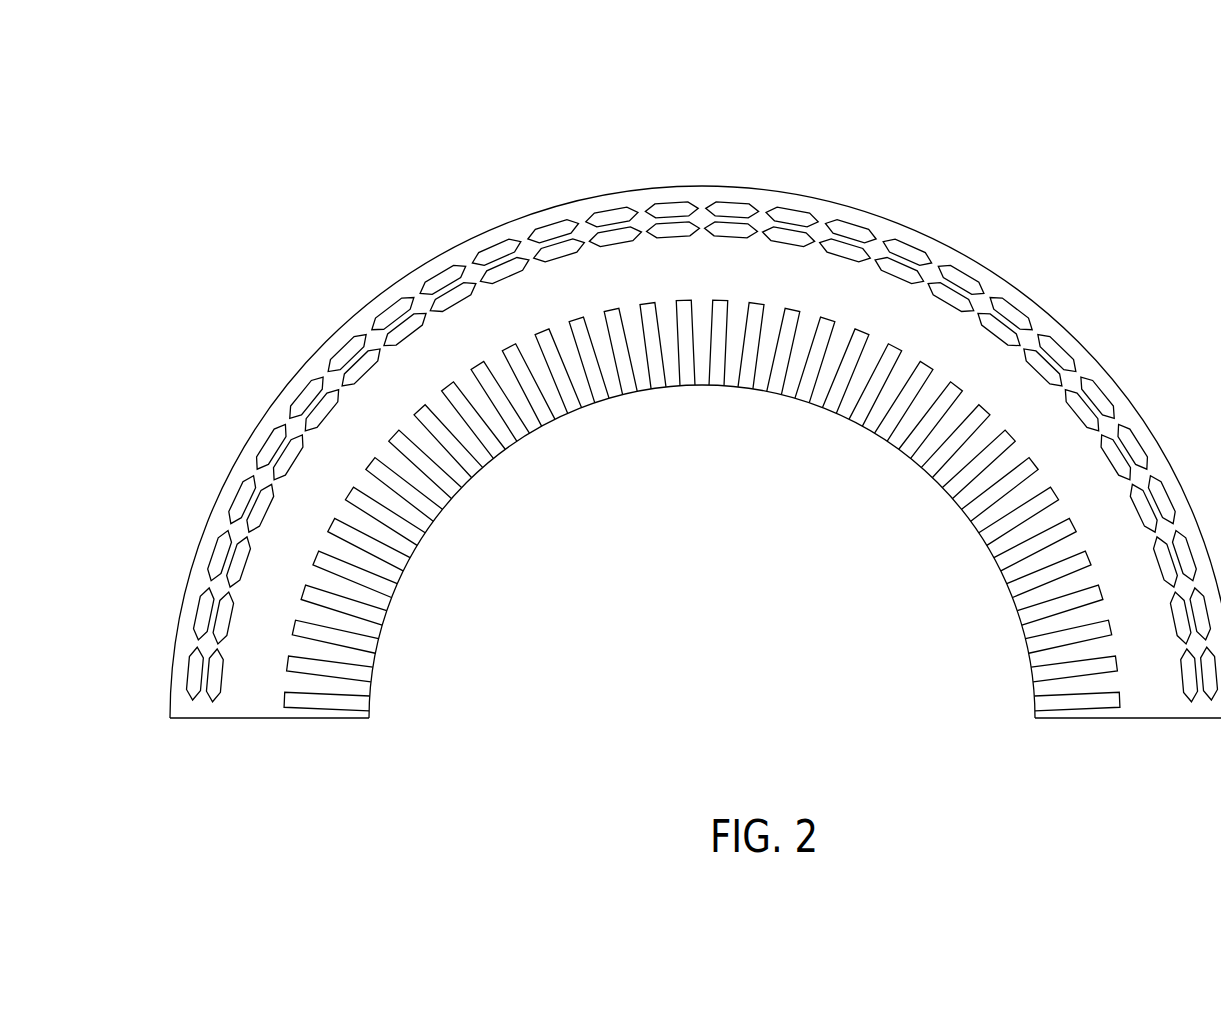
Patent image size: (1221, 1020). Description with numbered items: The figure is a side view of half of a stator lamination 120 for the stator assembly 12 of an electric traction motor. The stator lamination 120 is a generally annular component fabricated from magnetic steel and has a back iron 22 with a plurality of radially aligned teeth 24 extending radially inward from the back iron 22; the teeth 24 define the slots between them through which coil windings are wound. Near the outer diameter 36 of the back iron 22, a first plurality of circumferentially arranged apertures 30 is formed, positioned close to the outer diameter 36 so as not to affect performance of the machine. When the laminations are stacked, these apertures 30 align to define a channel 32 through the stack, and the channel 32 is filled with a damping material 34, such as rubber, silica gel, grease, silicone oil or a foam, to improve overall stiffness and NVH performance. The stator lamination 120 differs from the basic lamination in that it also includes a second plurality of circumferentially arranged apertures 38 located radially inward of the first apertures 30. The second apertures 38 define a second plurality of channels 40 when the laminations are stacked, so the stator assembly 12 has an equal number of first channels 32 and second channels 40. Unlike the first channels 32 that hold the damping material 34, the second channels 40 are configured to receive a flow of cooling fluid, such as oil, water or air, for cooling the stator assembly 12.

The stator assembly 12 is at (1128, 142).
The stator lamination 120 is at (410, 198).
The back iron 22 is at (994, 291).
The teeth 24 is at (500, 432).
The apertures 30 is at (608, 208).
The channel 32 is at (675, 207).
The damping material 34 is at (627, 208).
The outer diameter 36 is at (1038, 306).
The second apertures 38 is at (800, 230).
The second channels 40 is at (798, 226).